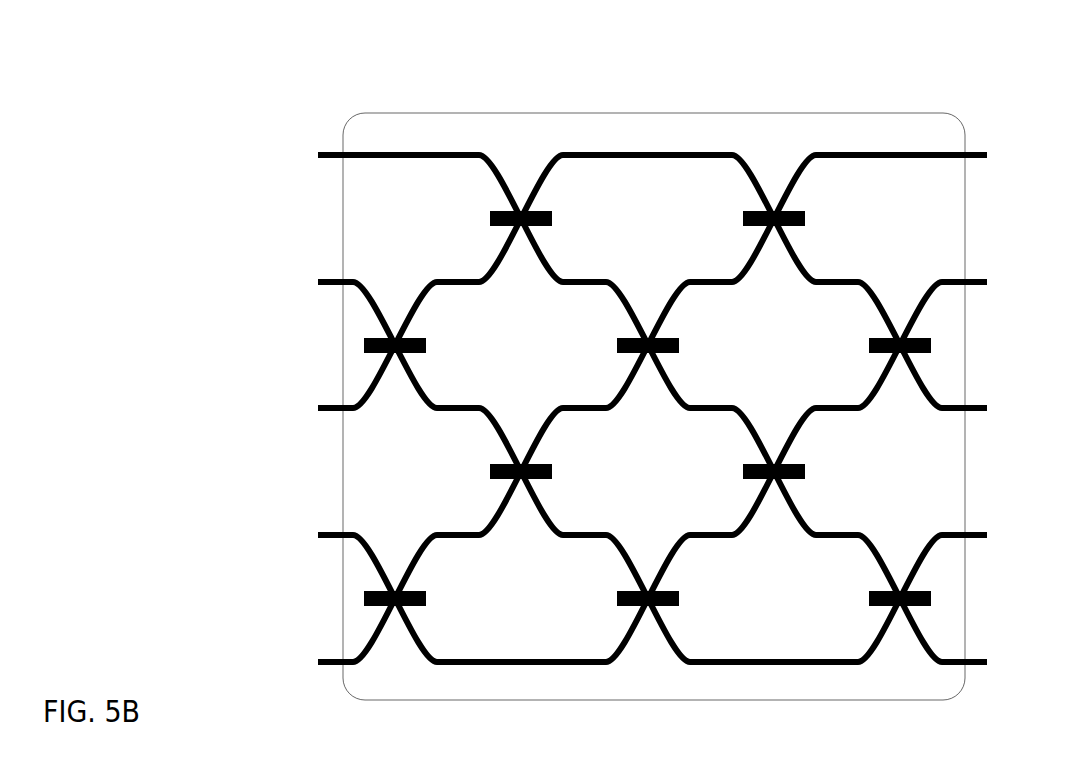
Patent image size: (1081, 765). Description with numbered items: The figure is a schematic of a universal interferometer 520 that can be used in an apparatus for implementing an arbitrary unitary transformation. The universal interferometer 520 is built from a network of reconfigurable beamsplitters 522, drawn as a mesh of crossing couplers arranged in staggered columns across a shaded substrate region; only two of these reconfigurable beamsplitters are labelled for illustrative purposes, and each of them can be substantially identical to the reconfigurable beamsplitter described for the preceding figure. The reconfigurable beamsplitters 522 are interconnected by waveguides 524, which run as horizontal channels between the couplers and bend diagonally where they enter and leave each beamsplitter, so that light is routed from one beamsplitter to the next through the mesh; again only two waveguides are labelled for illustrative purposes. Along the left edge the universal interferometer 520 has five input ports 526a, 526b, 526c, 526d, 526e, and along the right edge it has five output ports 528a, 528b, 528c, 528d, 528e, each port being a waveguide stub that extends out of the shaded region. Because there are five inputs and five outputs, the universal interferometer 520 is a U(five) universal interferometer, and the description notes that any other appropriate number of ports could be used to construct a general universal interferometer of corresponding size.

The universal interferometer 520 is at (214, 264).
The network of reconfigurable beamsplitters 522 is at (642, 335).
The waveguides 524 is at (470, 409).
The input port 526a is at (294, 154).
The input port 526b is at (296, 284).
The input port 526c is at (296, 409).
The input port 526d is at (295, 534).
The input port 526e is at (295, 659).
The output port 528a is at (1010, 156).
The output port 528b is at (1013, 286).
The output port 528c is at (1012, 413).
The output port 528d is at (1012, 538).
The output port 528e is at (1011, 664).